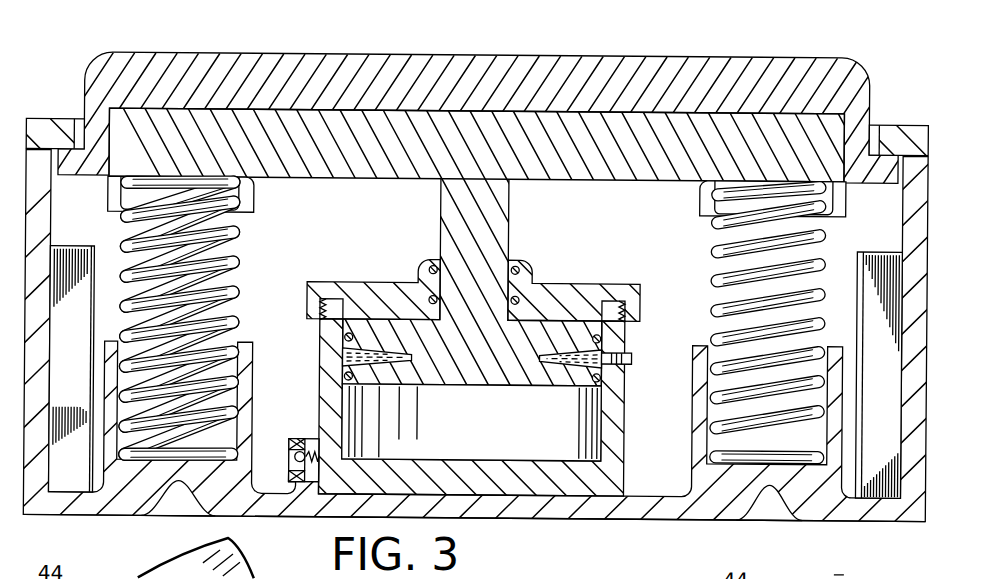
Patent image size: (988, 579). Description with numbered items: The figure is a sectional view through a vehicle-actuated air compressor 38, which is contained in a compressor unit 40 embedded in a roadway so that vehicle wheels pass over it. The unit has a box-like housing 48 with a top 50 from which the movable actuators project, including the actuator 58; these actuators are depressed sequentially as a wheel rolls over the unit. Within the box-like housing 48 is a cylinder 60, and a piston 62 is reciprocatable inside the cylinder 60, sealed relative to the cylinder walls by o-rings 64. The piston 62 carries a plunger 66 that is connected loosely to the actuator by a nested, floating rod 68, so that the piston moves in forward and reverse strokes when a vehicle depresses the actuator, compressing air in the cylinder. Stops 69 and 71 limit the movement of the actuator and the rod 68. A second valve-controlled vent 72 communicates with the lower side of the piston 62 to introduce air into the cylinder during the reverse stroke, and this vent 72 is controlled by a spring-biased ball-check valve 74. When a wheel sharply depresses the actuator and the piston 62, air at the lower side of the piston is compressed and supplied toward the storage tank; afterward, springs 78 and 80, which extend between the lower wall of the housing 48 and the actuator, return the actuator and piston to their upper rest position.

The vehicle-actuated air compressor 38 is at (895, 75).
The compressor unit 40 is at (90, 508).
The box-like housing 48 is at (708, 512).
The top 50 is at (48, 121).
The movable actuator 58 is at (462, 56).
The cylinder 60 is at (620, 432).
The piston 62 is at (478, 378).
The o-rings 64 is at (612, 350).
The plunger 66 is at (500, 227).
The nested, floating rod 68 is at (363, 170).
The stop 69 is at (82, 392).
The stop 71 is at (897, 158).
The second valve-controlled vent 72 is at (296, 458).
The spring-biased ball-check valve 74 is at (296, 446).
The spring 78 is at (236, 258).
The spring 80 is at (713, 252).